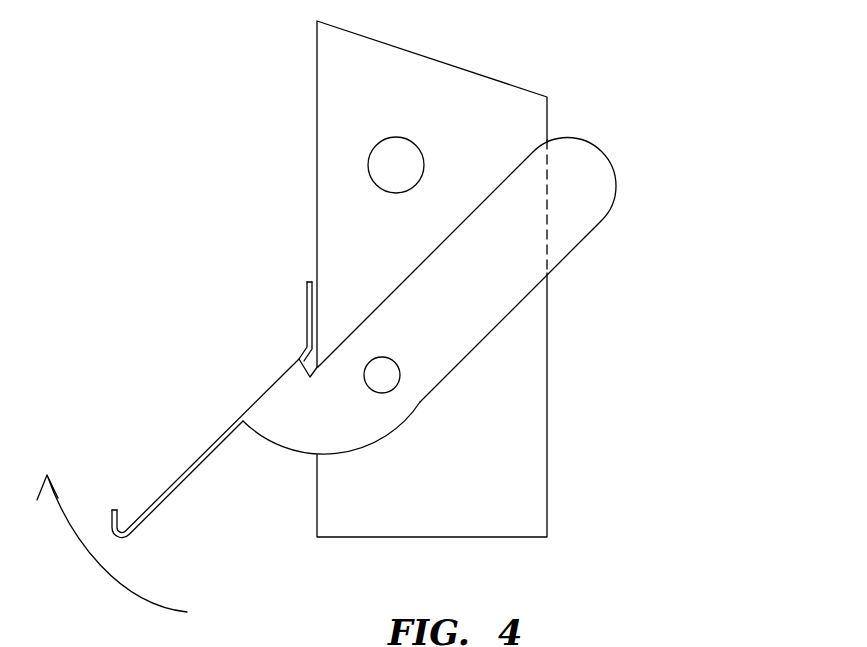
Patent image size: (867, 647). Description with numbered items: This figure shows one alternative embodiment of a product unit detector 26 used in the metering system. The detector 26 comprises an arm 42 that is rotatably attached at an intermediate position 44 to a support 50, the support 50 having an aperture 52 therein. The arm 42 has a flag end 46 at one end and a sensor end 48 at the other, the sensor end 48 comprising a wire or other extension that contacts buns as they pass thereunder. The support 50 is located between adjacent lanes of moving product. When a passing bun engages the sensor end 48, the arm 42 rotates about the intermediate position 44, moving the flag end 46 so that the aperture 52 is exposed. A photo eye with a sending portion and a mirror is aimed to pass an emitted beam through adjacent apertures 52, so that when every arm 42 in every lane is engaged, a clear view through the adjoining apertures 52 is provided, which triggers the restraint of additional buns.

The detector 26 is at (650, 135).
The arm 42 is at (450, 315).
The intermediate position 44 is at (383, 377).
The flag end 46 is at (547, 230).
The sensor end 48 is at (203, 455).
The support 50 is at (428, 82).
The aperture 52 is at (378, 165).